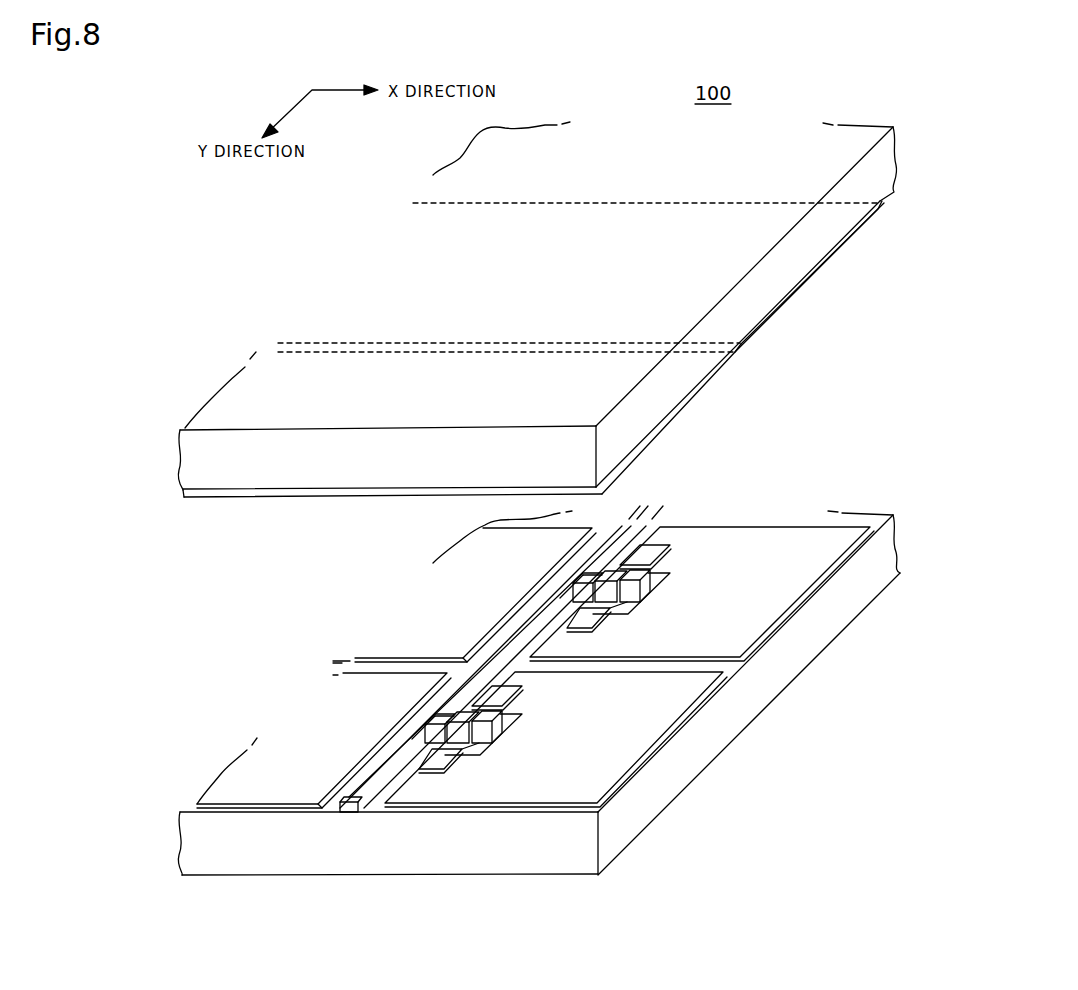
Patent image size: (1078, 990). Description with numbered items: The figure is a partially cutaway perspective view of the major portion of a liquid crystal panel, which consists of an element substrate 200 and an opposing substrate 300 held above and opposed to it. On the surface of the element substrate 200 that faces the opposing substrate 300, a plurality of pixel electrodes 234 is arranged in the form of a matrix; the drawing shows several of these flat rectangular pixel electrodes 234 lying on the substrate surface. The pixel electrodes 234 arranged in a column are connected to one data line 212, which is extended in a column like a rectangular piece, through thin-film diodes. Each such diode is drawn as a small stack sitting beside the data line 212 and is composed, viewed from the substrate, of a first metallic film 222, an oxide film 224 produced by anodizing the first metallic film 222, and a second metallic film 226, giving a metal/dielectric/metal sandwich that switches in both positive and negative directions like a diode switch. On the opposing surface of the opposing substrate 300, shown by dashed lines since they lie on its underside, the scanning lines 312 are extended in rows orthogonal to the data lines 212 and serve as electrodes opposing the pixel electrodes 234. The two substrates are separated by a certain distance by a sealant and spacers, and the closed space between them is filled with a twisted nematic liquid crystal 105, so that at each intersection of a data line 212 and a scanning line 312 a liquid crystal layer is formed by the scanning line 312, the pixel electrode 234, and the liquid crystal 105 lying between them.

The liquid crystal 105 is at (842, 430).
The element substrate 200 is at (812, 630).
The data line 212 is at (350, 810).
The first metallic film 222 is at (500, 736).
The oxide film 224 is at (478, 742).
The second metallic film 226 is at (462, 752).
The pixel electrode 234 is at (733, 632).
The opposing substrate 300 is at (812, 243).
The scanning line 312 is at (800, 289).